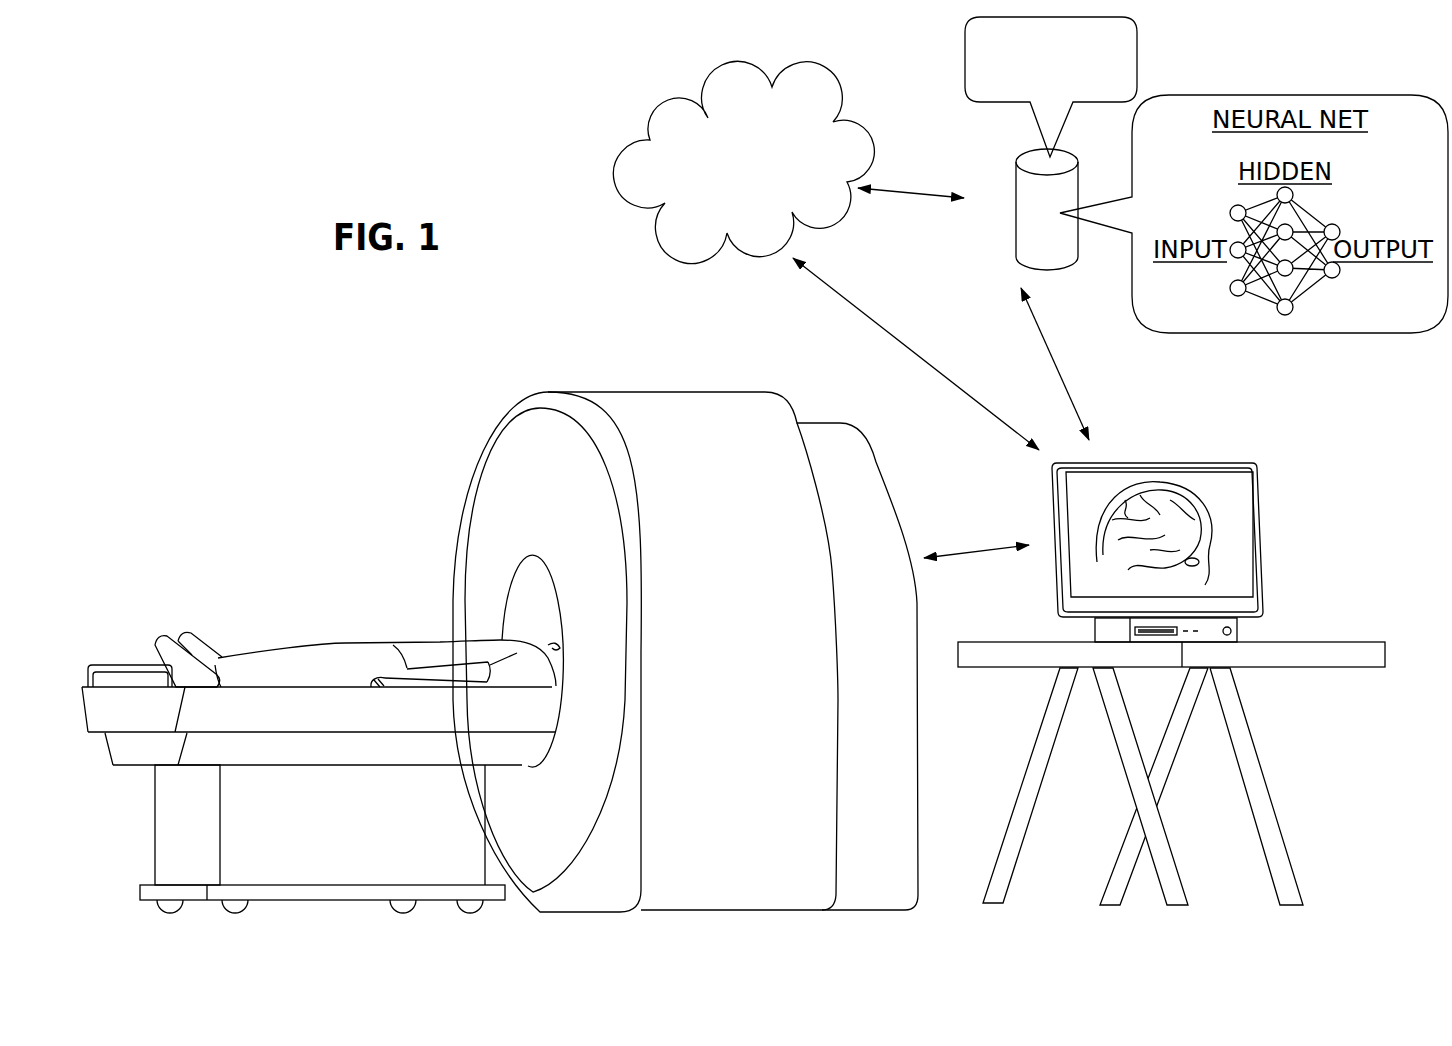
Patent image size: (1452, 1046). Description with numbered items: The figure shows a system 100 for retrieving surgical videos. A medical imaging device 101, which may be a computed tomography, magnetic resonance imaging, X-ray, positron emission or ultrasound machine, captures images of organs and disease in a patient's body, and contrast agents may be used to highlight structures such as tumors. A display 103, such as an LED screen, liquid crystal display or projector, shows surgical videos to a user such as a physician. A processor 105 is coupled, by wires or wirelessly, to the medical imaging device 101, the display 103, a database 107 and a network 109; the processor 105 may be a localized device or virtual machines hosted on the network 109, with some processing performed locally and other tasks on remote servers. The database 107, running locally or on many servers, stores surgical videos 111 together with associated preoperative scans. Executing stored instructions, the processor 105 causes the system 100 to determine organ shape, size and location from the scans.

The system 100 is at (542, 141).
The medical imaging device 101 is at (793, 628).
The display 103 is at (1238, 510).
The processor 105 is at (1240, 631).
The database 107 is at (1045, 248).
The network 109 is at (830, 176).
The surgical videos 111 is at (1117, 91).